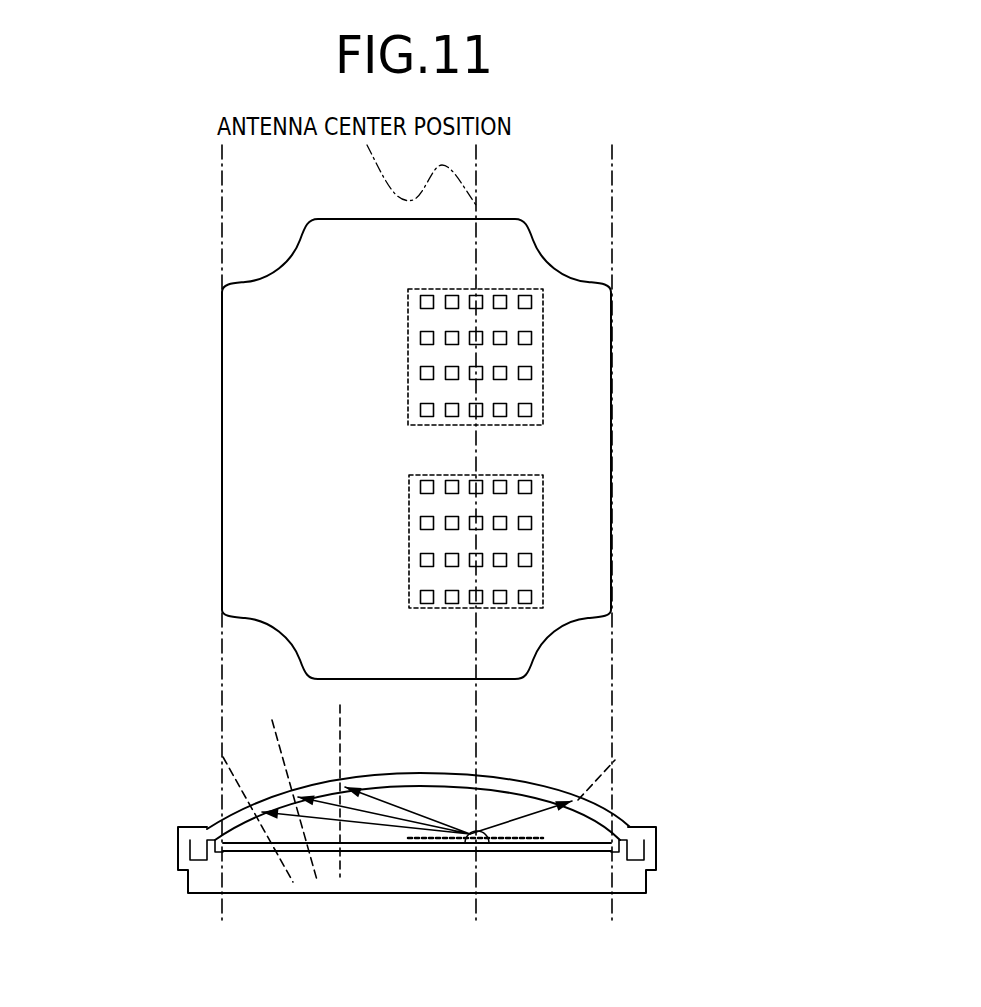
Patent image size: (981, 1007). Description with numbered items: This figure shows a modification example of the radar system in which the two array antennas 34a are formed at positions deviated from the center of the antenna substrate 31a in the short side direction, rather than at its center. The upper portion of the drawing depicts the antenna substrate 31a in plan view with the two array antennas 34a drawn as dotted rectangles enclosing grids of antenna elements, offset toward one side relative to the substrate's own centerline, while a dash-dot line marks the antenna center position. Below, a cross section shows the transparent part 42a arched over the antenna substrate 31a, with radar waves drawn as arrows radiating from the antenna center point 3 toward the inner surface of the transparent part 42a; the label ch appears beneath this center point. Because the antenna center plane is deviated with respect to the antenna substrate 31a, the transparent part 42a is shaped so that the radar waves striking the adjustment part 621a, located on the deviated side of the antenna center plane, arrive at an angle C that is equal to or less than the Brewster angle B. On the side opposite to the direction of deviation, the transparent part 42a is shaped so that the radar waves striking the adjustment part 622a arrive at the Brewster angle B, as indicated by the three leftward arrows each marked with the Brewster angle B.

The antenna substrate 31a is at (222, 330).
The array antennas 34a is at (543, 340).
The transparent part 42a is at (410, 776).
The adjustment part 621a is at (612, 793).
The adjustment part 622a is at (262, 800).
The antenna center 3 is at (477, 850).
The channel ch is at (455, 980).
The Brewster angle B is at (262, 815).
The angle C is at (552, 808).